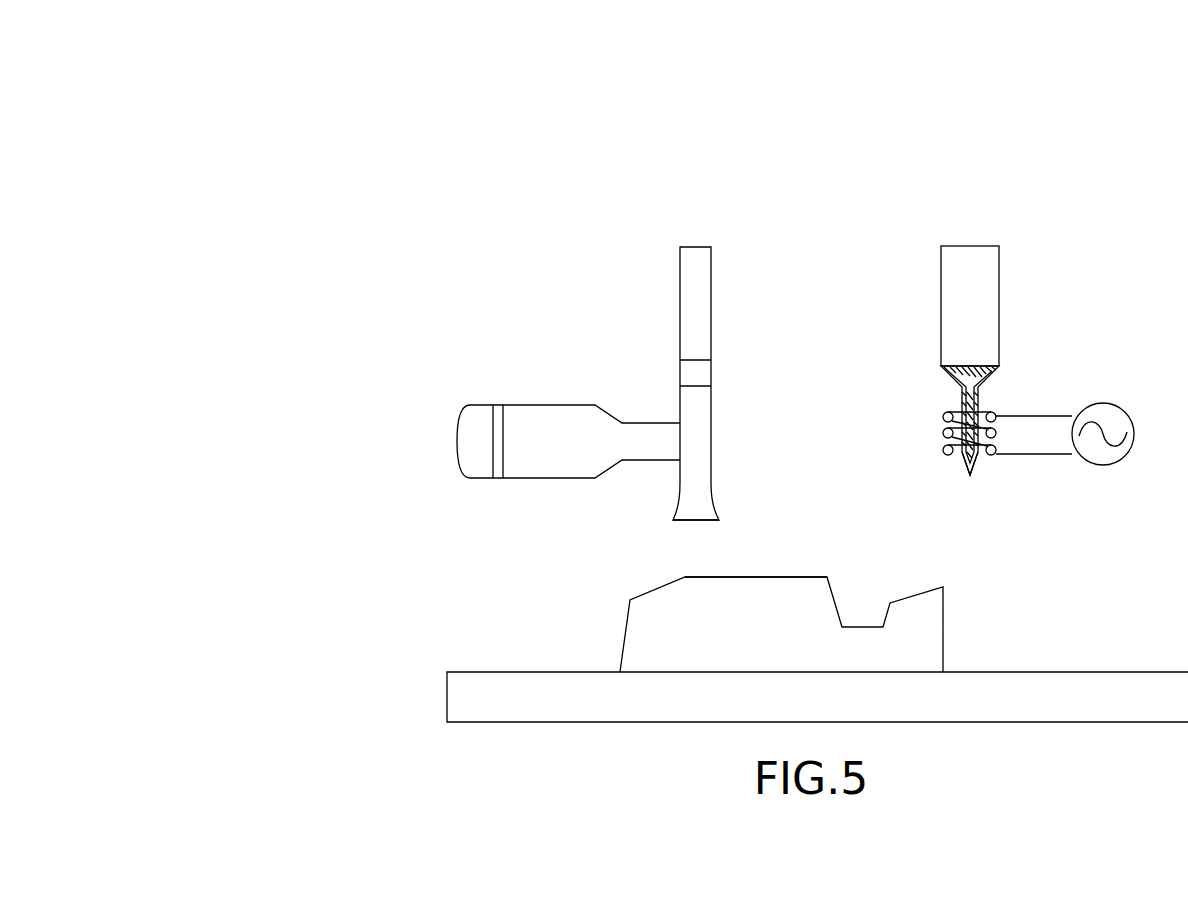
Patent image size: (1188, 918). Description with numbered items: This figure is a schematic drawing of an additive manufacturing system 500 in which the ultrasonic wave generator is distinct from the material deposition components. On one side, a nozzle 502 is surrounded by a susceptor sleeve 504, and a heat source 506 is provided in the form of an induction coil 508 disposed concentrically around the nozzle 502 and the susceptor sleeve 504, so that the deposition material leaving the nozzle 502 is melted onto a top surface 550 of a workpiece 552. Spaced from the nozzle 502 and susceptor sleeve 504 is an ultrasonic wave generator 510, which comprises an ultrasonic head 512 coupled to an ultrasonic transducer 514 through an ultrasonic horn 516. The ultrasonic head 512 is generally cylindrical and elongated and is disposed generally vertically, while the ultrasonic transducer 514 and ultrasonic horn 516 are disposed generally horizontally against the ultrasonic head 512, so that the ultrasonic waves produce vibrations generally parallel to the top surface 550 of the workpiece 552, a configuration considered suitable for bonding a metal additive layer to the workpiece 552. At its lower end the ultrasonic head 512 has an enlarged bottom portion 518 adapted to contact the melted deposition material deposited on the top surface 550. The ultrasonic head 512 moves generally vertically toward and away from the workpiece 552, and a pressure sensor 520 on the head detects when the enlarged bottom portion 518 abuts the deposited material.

The additive manufacturing system 500 is at (366, 144).
The nozzle 502 is at (973, 463).
The susceptor sleeve 504 is at (955, 382).
The heat source 506 is at (1050, 393).
The induction coil 508 is at (950, 453).
The ultrasonic wave generator 510 is at (616, 308).
The ultrasonic head 512 is at (707, 293).
The ultrasonic transducer 514 is at (465, 428).
The ultrasonic horn 516 is at (552, 410).
The enlarged bottom portion 518 is at (707, 520).
The pressure sensor 520 is at (705, 375).
The top surface 550 is at (685, 577).
The workpiece 552 is at (787, 647).